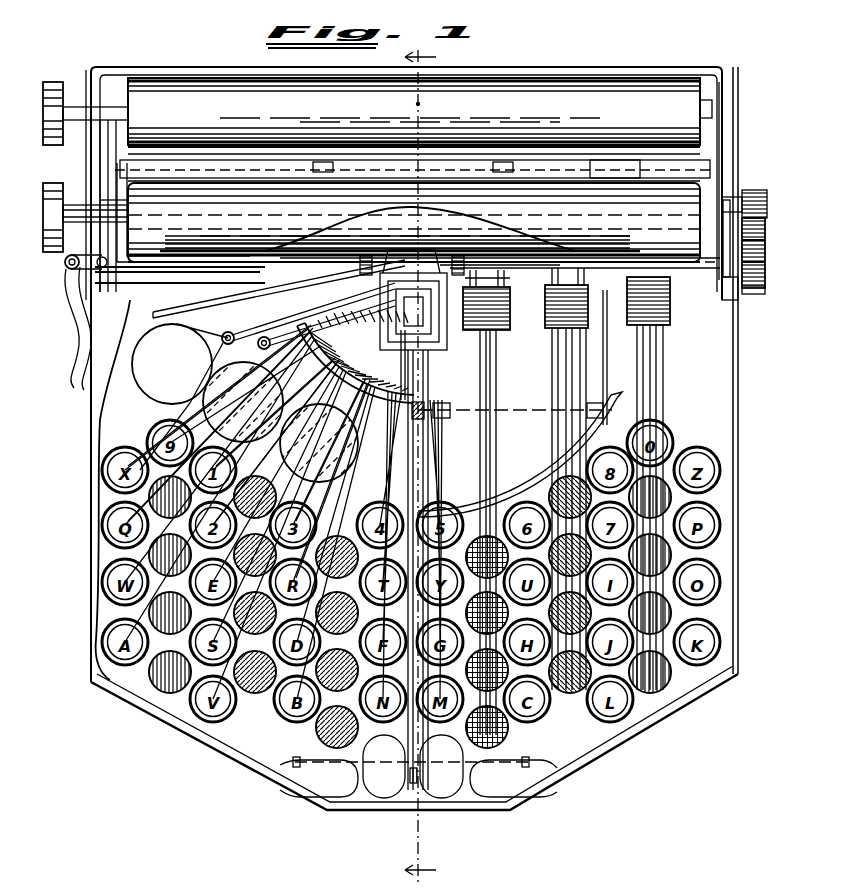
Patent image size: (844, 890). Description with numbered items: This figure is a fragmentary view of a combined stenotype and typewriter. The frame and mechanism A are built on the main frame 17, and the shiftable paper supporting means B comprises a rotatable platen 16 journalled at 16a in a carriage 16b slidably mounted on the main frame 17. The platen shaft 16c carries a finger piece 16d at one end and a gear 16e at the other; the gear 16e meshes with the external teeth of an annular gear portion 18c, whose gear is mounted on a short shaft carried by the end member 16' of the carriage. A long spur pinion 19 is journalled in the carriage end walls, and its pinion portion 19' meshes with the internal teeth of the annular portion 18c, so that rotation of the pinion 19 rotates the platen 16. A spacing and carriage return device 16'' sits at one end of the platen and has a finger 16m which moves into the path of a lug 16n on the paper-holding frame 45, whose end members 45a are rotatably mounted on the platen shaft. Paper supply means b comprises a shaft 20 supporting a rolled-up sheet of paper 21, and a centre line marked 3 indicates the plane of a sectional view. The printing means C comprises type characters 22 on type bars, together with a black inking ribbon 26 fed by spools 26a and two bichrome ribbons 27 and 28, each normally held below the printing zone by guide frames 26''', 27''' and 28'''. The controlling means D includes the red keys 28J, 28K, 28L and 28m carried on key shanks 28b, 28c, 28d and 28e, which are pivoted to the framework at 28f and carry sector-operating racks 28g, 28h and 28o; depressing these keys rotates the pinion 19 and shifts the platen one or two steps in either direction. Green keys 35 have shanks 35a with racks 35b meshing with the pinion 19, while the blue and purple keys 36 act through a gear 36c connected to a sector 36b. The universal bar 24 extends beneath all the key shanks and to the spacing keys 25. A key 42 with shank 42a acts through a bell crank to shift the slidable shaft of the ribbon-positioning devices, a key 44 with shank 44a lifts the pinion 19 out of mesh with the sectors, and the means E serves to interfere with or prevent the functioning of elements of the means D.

The section line 3 is at (420, 462).
The paper supply means b is at (427, 104).
The main frame 17 is at (96, 425).
The rolled up strip or sheet of paper 21 is at (668, 84).
The shaft 20 is at (706, 107).
The carriage 16b is at (716, 148).
The journal 16a is at (729, 198).
The gear 16e is at (768, 213).
The pinion portion 19' is at (776, 253).
The annular portion 18c is at (766, 294).
The end member of the carriage 16' is at (749, 299).
The finger piece 16d is at (70, 167).
The platen shaft 16c is at (72, 206).
The frame 45 is at (323, 168).
The end members 45a is at (592, 170).
The platen 16 is at (414, 222).
The shiftable paper supporting means B is at (248, 212).
The finger 16m is at (120, 262).
The lug 16n is at (140, 265).
The long spur pinion 19 is at (440, 226).
The curved sector-operating rack 28o is at (672, 296).
The pivot 28f is at (618, 354).
The spacing and carriage return device 16'' is at (62, 322).
The frame and mechanism A is at (107, 326).
The ribbon spools 26a is at (134, 369).
The inking ribbon 26 is at (279, 289).
The bichrome ribbon 27 is at (267, 376).
The bichrome ribbon 28 is at (347, 461).
The printing means C is at (355, 363).
The type characters 22 is at (318, 367).
The guide frame 28''' is at (418, 305).
The key shank 42a is at (403, 372).
The guide frame 26''' is at (500, 262).
The guide frame 27''' is at (508, 273).
The sector 36b is at (501, 284).
The gear 36c is at (500, 309).
The racks 35b is at (575, 338).
The key shanks 35a is at (575, 395).
The curved sector-operating rack 28g is at (645, 325).
The curved sector-operating rack 28h is at (665, 326).
The key shank 28c is at (658, 358).
The key shank 28b is at (648, 374).
The key shank 28d is at (660, 390).
The key shank 28e is at (642, 404).
The controlling means D is at (692, 428).
The color controlling keys 36 is at (500, 462).
The green keys 35 is at (590, 500).
The key shank 44a is at (441, 419).
The universal bar 24 is at (525, 488).
The key 28m is at (168, 497).
The key 28L is at (160, 556).
The key 28J is at (155, 613).
The key 28K is at (160, 670).
The key 42 is at (389, 800).
The key 44 is at (447, 800).
The interfering means E is at (407, 824).
The spacing keys 25 is at (322, 783).